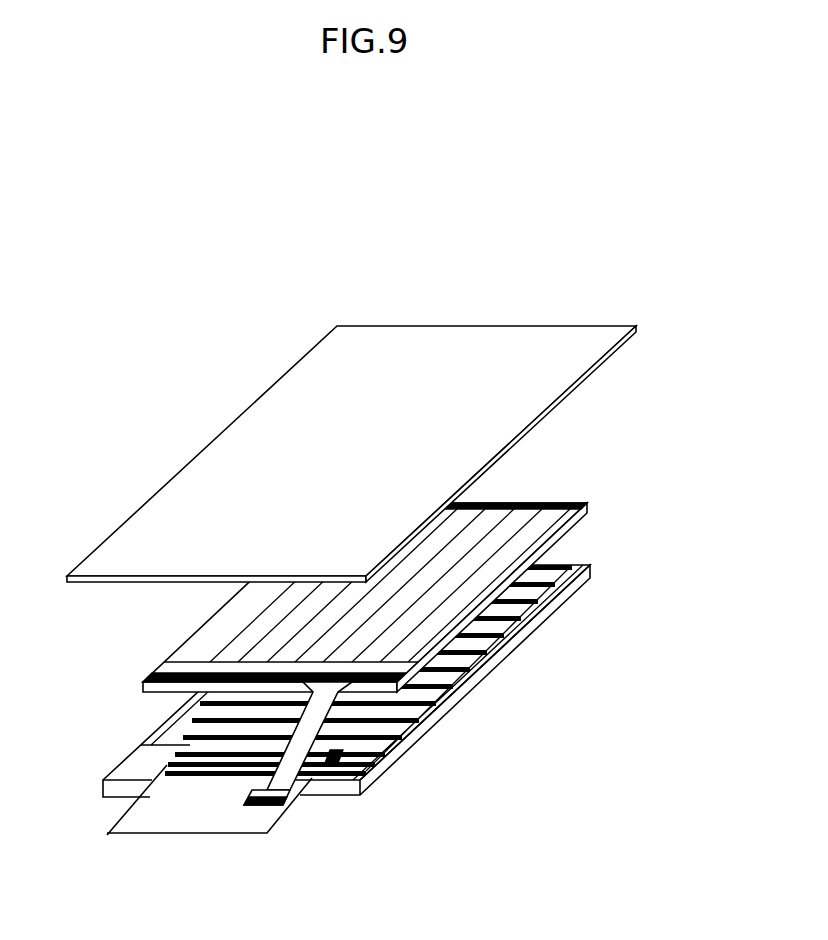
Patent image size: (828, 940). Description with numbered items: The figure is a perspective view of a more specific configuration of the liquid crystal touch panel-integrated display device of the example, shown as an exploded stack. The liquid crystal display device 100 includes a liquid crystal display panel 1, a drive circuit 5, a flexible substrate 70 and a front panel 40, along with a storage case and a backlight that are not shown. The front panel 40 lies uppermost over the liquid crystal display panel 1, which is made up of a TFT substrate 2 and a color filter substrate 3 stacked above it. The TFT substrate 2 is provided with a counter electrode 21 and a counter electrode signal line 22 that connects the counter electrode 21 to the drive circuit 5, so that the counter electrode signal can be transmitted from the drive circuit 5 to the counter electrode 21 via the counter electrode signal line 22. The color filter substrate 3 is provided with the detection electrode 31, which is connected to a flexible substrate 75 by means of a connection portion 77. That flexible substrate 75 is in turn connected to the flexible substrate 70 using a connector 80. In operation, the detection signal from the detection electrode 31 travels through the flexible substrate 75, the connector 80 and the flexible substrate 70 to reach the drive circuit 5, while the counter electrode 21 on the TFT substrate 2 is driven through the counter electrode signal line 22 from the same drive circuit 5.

The liquid crystal display panel 1 is at (636, 503).
The TFT substrate 2 is at (574, 564).
The color filter substrate 3 is at (570, 501).
The drive circuit 5 is at (393, 763).
The counter electrode 21 is at (527, 640).
The counter electrode signal line 22 is at (490, 666).
The detection electrode 31 is at (514, 502).
The front panel 40 is at (445, 337).
The flexible substrate 70 is at (237, 831).
The flexible substrate 75 is at (323, 793).
The connection portion 77 is at (170, 670).
The connector 80 is at (297, 805).
The liquid crystal display device 100 is at (200, 857).